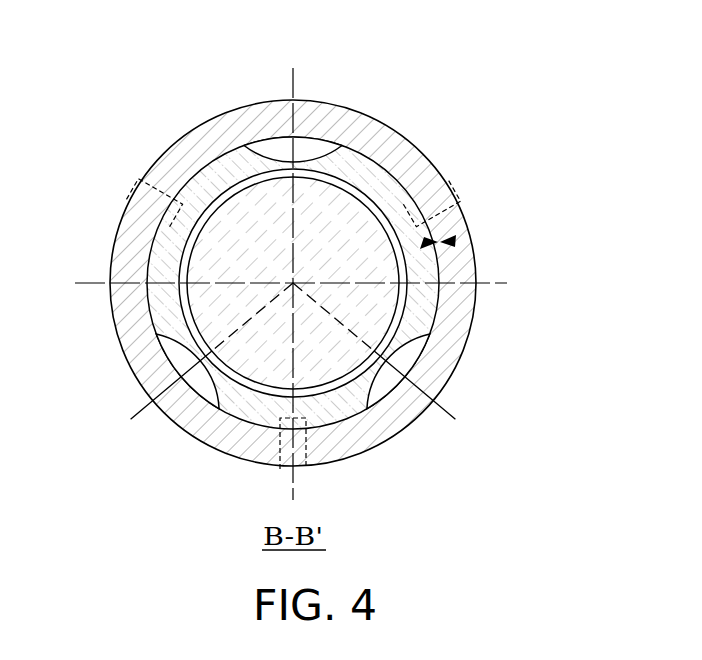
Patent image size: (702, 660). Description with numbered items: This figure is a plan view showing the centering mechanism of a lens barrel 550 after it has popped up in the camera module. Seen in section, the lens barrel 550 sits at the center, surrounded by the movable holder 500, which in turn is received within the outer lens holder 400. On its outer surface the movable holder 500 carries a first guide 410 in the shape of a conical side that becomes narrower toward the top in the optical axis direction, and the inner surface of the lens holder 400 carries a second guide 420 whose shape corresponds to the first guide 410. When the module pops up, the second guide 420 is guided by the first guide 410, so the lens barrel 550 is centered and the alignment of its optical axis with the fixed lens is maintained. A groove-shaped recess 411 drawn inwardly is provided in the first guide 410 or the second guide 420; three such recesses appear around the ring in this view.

The lens holder 400 is at (417, 170).
The first guide 410 is at (424, 246).
The groove-shaped recess 411 is at (317, 150).
The second guide 420 is at (458, 240).
The movable holder 500 is at (370, 168).
The lens barrel 550 is at (382, 305).